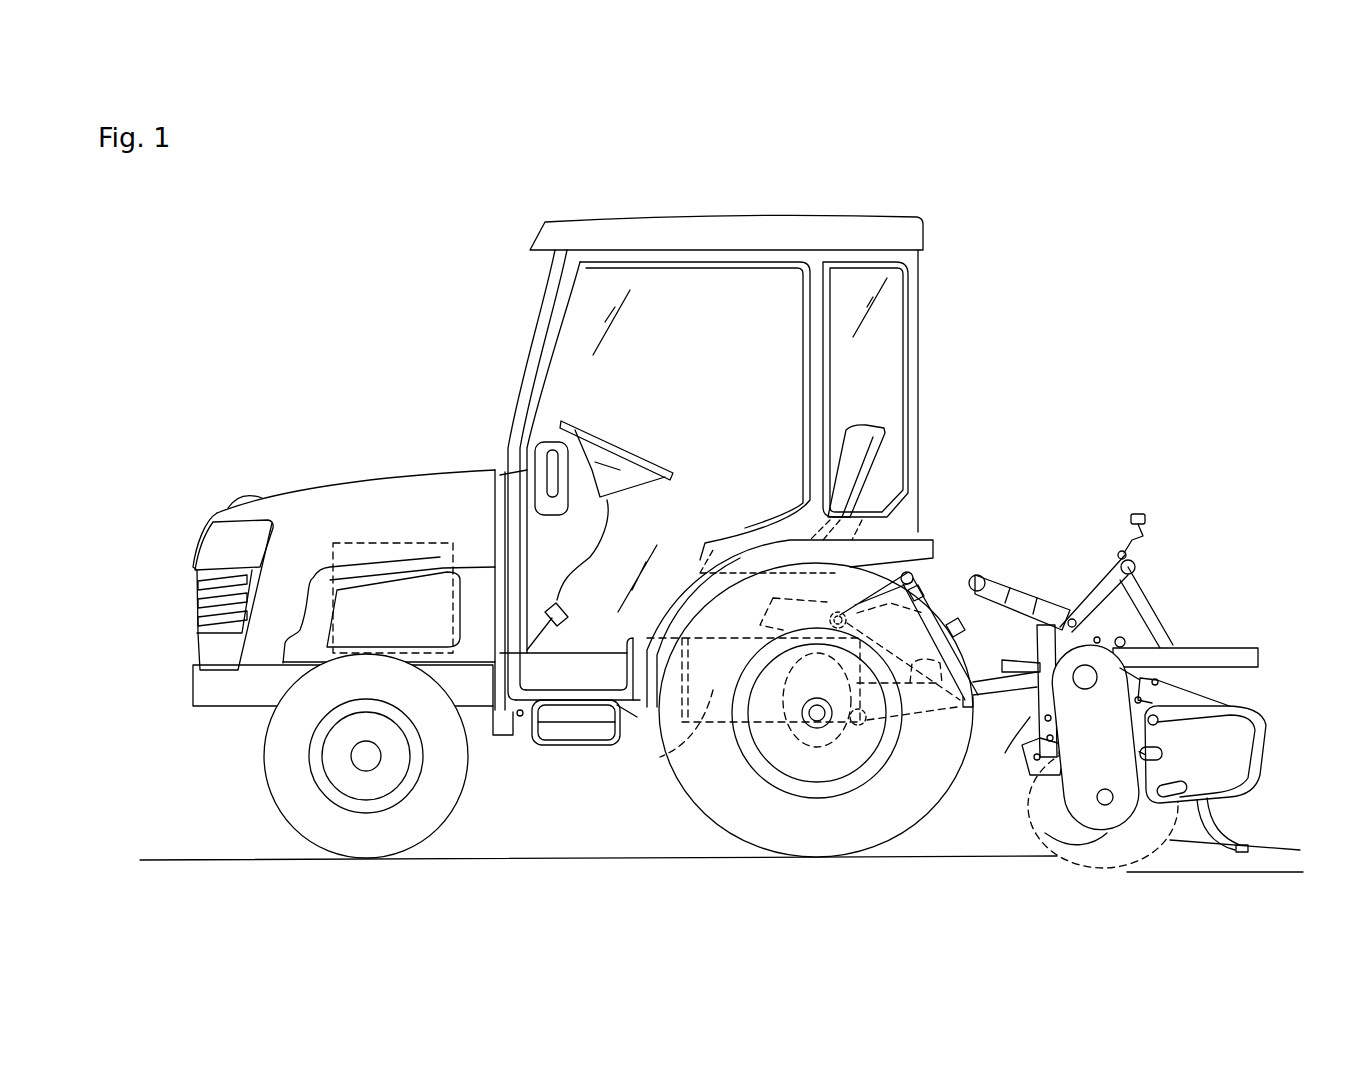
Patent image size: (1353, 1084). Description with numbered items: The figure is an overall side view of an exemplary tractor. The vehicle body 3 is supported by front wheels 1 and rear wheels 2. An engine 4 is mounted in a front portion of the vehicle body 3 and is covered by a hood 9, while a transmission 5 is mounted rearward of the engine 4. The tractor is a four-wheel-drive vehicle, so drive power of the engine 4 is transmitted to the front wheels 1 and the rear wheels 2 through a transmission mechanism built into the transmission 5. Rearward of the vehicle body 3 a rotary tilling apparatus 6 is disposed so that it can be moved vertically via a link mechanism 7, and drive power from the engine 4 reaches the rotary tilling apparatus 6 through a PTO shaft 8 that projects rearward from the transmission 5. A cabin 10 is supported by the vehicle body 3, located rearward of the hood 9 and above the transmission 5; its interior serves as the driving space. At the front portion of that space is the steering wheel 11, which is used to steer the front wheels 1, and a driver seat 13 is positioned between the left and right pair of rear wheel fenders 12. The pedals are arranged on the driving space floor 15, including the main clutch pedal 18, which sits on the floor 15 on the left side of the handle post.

The front wheels 1 is at (302, 822).
The rear wheels 2 is at (707, 820).
The vehicle body 3 is at (205, 718).
The engine 4 is at (392, 543).
The transmission 5 is at (662, 756).
The rotary tilling apparatus 6 is at (1207, 565).
The link mechanism 7 is at (1002, 572).
The PTO shaft 8 is at (940, 690).
The hood 9 is at (333, 477).
The cabin 10 is at (543, 300).
The steering wheel 11 is at (610, 438).
The rear wheel fenders 12 is at (930, 535).
The driver seat 13 is at (878, 428).
The driving space floor 15 is at (583, 653).
The main clutch pedal 18 is at (577, 567).